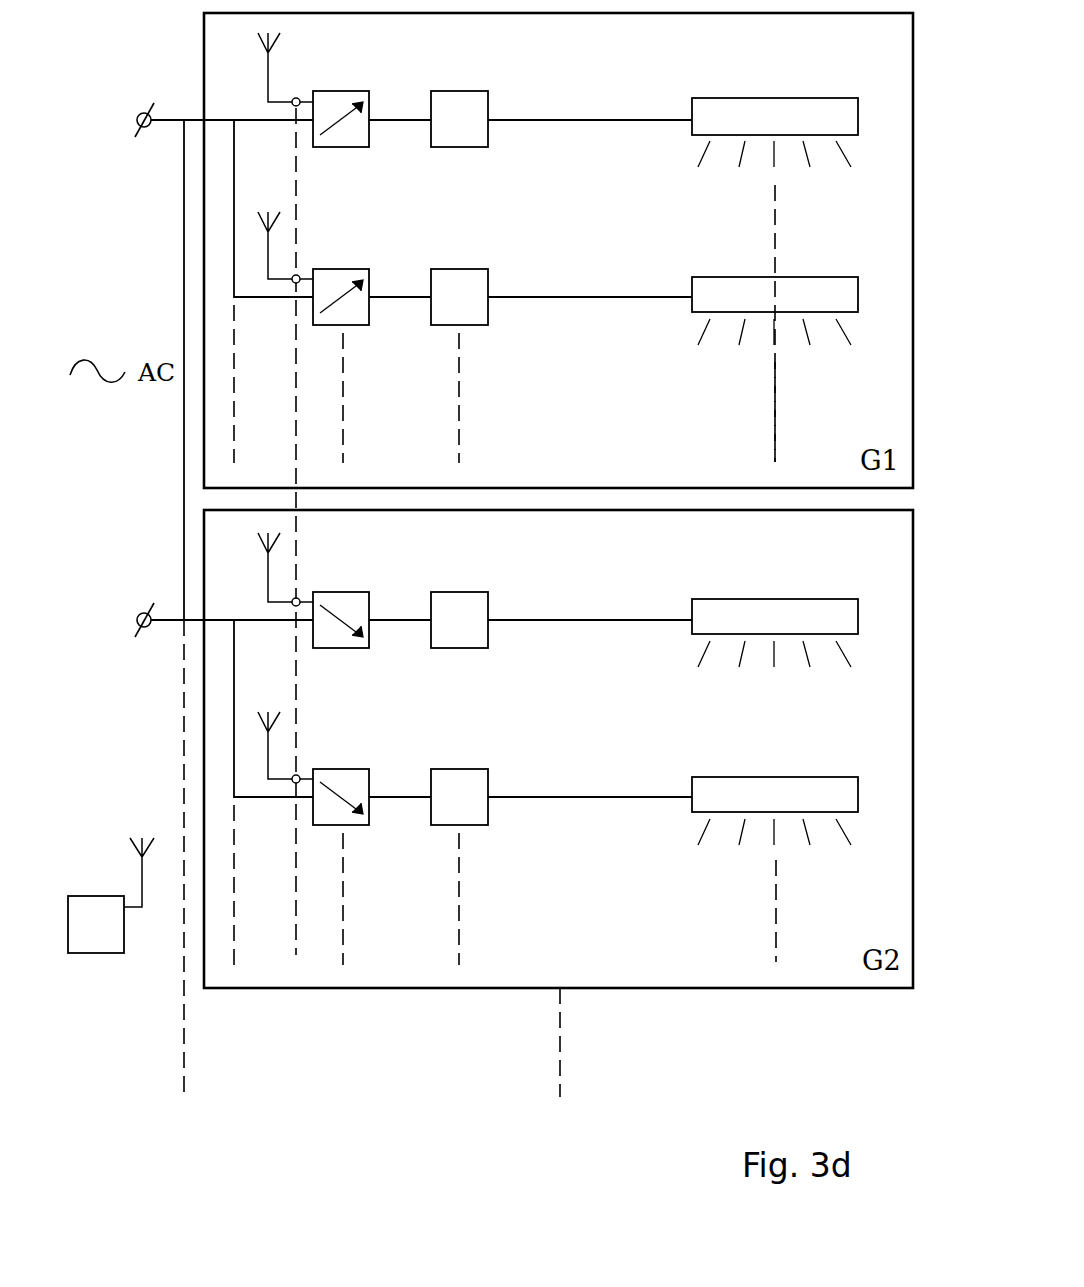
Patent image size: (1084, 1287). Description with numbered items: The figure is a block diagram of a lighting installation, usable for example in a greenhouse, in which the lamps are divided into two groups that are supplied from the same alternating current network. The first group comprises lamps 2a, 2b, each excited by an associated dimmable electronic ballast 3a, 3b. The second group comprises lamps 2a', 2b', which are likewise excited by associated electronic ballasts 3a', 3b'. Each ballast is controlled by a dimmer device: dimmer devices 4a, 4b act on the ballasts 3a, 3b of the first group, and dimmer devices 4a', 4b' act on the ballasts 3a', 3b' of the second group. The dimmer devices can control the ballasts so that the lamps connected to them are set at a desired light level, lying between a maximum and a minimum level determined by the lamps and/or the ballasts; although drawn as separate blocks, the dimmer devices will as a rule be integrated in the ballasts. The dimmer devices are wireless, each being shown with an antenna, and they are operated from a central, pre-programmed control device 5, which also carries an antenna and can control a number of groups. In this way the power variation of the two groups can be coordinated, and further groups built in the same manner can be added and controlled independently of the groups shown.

The lamp 2a is at (775, 249).
The lamp 2b is at (775, 340).
The lamp 2a' is at (775, 602).
The lamp 2b' is at (775, 839).
The electronic ballast 3a is at (459, 89).
The electronic ballast 3b is at (459, 338).
The electronic ballast 3a' is at (462, 589).
The electronic ballast 3b' is at (462, 839).
The dimmer device 4a is at (341, 89).
The dimmer device 4b is at (341, 338).
The dimmer device 4a' is at (344, 589).
The dimmer device 4b' is at (344, 839).
The central control device 5 is at (82, 896).